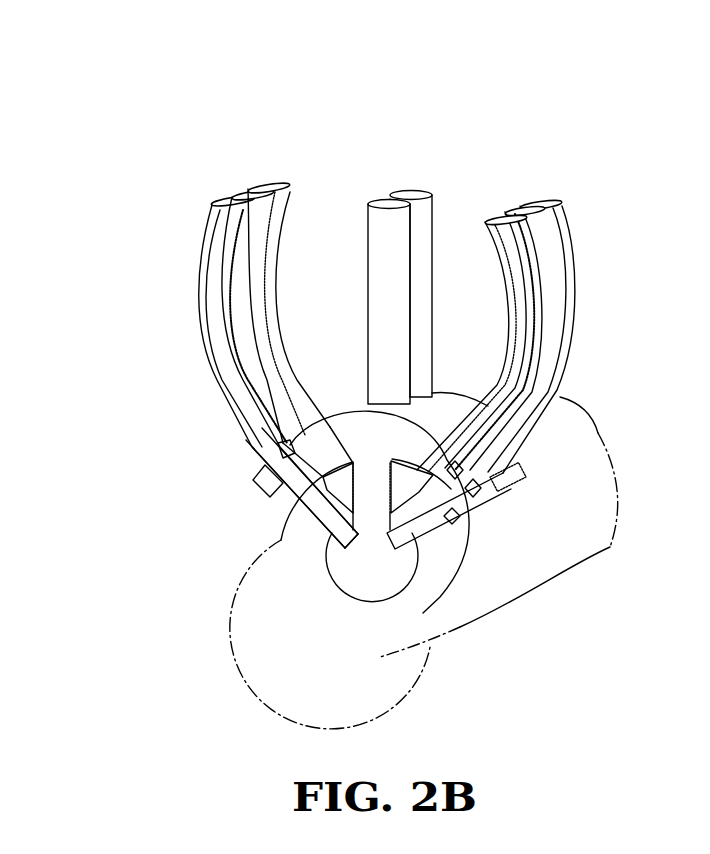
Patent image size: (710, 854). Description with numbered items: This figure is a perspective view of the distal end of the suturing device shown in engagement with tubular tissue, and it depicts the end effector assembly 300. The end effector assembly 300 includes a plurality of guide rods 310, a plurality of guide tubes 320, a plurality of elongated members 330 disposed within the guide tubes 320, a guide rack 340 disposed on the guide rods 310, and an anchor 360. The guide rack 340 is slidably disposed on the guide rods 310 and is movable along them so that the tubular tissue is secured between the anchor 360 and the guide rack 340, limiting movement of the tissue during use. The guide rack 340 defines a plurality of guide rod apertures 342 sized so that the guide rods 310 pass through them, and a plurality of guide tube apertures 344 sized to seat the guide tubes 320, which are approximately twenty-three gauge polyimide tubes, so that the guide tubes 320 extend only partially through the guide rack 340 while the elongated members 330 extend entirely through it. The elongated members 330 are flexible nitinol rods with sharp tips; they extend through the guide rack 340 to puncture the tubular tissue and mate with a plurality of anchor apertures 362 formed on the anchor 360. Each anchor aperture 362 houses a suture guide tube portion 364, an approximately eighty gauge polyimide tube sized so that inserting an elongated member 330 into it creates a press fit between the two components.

The end effector assembly 300 is at (381, 391).
The guide rods 310 is at (390, 272).
The guide tubes 320 is at (530, 373).
The elongated members 330 is at (320, 505).
The guide rack 340 is at (523, 488).
The guide rod apertures 342 is at (410, 413).
The guide tube apertures 344 is at (257, 468).
The anchor 360 is at (390, 567).
The anchor apertures 362 is at (330, 537).
The suture guide tube portion 364 is at (320, 533).
The tubular tissue T is at (418, 618).